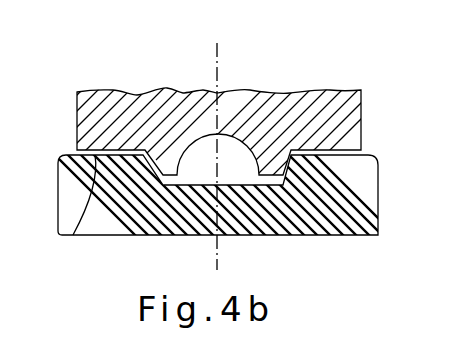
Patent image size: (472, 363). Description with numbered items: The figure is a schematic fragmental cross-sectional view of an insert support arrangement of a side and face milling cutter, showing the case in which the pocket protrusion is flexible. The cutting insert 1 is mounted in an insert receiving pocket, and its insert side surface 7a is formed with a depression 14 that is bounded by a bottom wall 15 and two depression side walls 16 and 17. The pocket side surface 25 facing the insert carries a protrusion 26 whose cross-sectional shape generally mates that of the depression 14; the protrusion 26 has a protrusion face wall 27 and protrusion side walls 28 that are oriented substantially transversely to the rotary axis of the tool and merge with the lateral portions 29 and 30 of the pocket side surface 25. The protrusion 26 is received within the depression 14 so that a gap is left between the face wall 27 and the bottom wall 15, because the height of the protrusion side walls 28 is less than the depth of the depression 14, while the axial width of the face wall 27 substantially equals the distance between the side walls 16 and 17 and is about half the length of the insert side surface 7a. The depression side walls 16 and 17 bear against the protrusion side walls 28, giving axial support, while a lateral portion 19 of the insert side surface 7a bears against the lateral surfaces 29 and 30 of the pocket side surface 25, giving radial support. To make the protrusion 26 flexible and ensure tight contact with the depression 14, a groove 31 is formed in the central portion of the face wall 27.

The cutting insert 1 is at (339, 235).
The insert side surface 7a is at (366, 148).
The depression 14 is at (205, 162).
The bottom wall 15 is at (240, 186).
The depression side wall 16 is at (306, 195).
The depression side wall 17 is at (121, 235).
The lateral portion of insert side surface 19 is at (75, 236).
The pocket side surface 25 is at (72, 149).
The protrusion 26 is at (274, 155).
The protrusion face wall 27 is at (162, 177).
The protrusion side walls 28 is at (158, 150).
The lateral portion of pocket side surface 29 is at (113, 149).
The lateral portion of pocket side surface 30 is at (343, 130).
The groove 31 is at (229, 155).